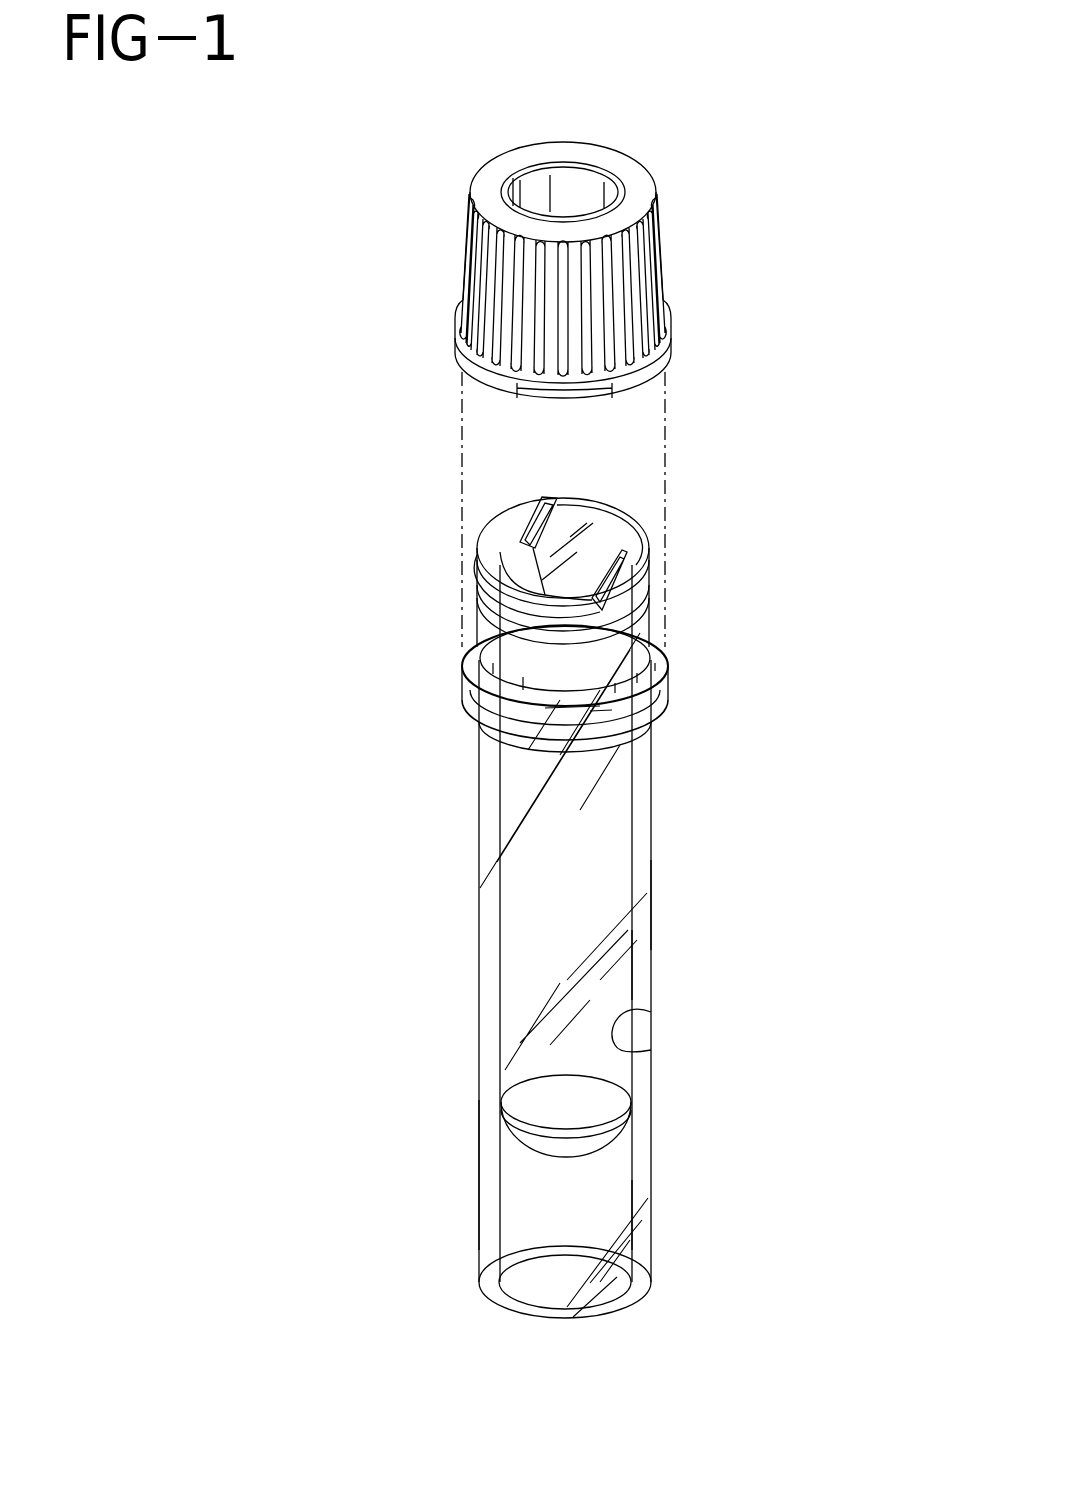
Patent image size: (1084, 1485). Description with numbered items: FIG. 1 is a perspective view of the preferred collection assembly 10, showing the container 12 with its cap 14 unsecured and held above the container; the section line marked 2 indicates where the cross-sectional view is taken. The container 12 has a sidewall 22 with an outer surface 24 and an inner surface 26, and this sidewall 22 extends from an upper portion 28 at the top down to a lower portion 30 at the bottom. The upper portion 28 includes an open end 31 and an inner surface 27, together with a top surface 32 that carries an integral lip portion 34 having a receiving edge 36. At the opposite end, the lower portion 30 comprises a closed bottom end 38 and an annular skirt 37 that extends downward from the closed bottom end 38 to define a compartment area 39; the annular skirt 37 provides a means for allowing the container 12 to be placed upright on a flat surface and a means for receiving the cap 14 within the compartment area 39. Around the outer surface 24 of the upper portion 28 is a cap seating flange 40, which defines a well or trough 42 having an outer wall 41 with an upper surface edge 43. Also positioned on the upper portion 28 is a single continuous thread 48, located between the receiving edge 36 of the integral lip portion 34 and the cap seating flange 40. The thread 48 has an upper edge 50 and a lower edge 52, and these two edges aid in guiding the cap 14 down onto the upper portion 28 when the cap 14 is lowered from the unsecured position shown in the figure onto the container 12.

The section line 2- 2 is at (323, 150).
The collection assembly 10 is at (268, 575).
The container 12 is at (570, 946).
The cap 14 is at (658, 222).
The sidewall 22 is at (641, 965).
The outer surface 24 is at (651, 904).
The inner surface 26 is at (651, 1014).
The inner surface 27 is at (597, 542).
The upper portion 28 is at (588, 581).
The lower portion 30 is at (480, 1175).
The open end 31 is at (557, 581).
The top surface 32 is at (636, 530).
The integral lip portion 34 is at (540, 524).
The receiving edge 36 is at (640, 462).
The annular skirt 37 is at (641, 1216).
The closed bottom end 38 is at (586, 1157).
The compartment area 39 is at (590, 1307).
The cap seating flange 40 is at (663, 693).
The outer wall 41 is at (647, 713).
The well or trough 42 is at (474, 681).
The upper surface edge 43 is at (490, 713).
The single continuous thread 48 is at (660, 612).
The upper edge 50 is at (660, 640).
The lower edge 52 is at (484, 653).